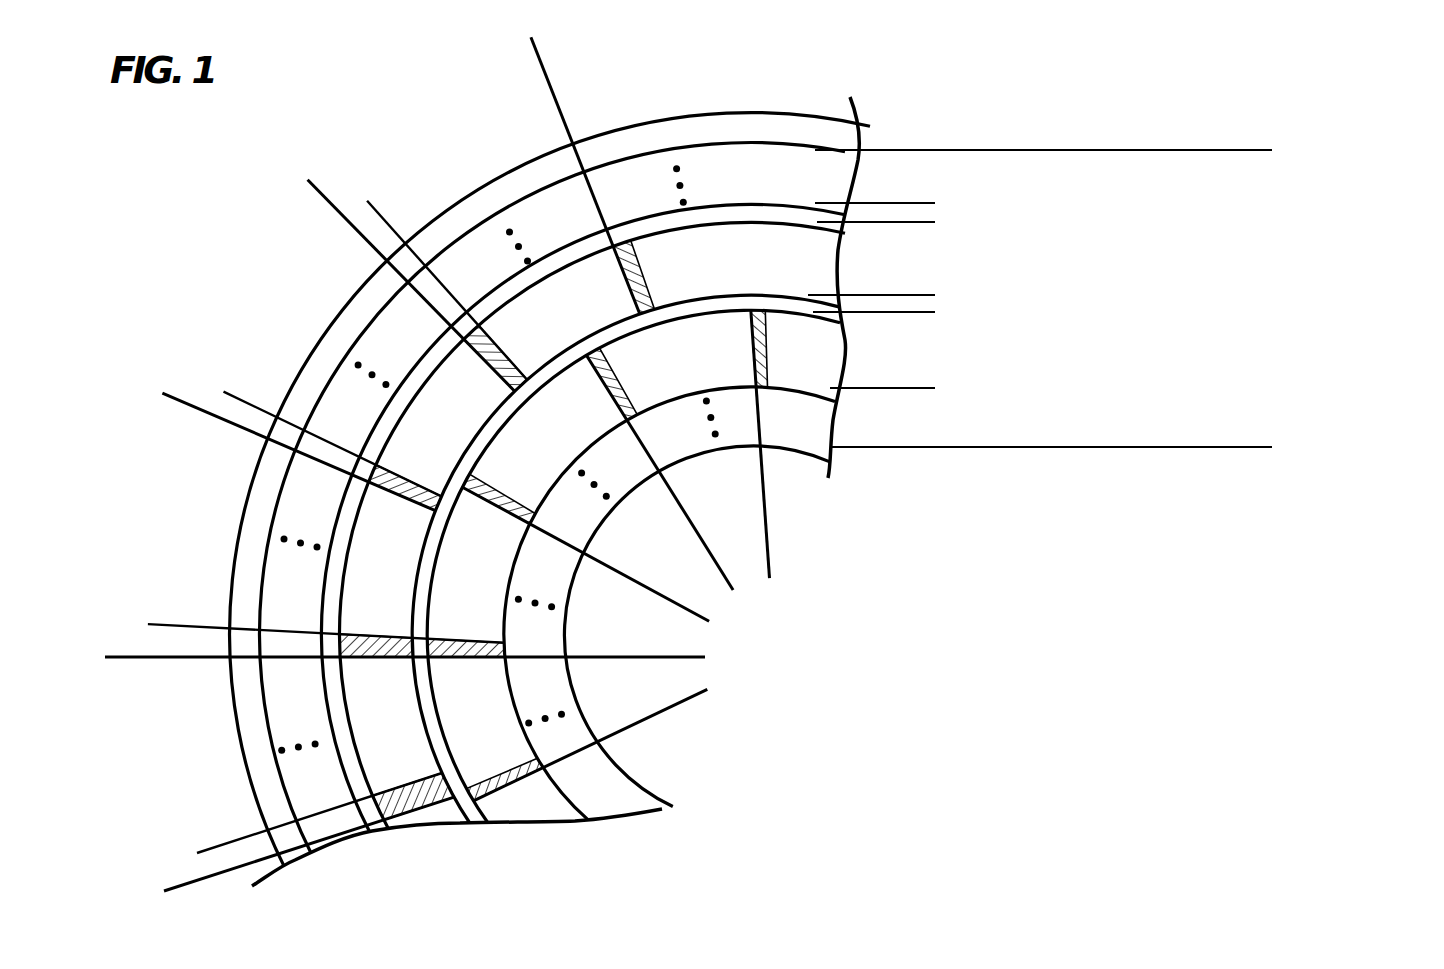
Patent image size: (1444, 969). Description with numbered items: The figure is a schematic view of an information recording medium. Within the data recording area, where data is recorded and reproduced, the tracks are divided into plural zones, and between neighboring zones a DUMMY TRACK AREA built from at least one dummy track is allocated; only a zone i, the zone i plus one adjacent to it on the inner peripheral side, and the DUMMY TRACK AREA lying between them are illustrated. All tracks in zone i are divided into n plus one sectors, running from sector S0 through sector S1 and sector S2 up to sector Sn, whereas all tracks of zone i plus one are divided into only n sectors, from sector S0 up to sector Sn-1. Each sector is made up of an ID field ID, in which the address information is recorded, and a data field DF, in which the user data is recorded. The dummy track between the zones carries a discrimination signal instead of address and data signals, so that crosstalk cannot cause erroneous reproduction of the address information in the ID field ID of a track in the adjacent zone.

The sector S0 is at (125, 657).
The sector S1 is at (320, 193).
The sector S2 is at (537, 52).
The sector Sn is at (169, 892).
The sector Sn-1 is at (658, 713).
The data field DF is at (555, 99).
The ID field ID is at (243, 927).
The dummy track area DUMMY TRACK AREA is at (922, 183).